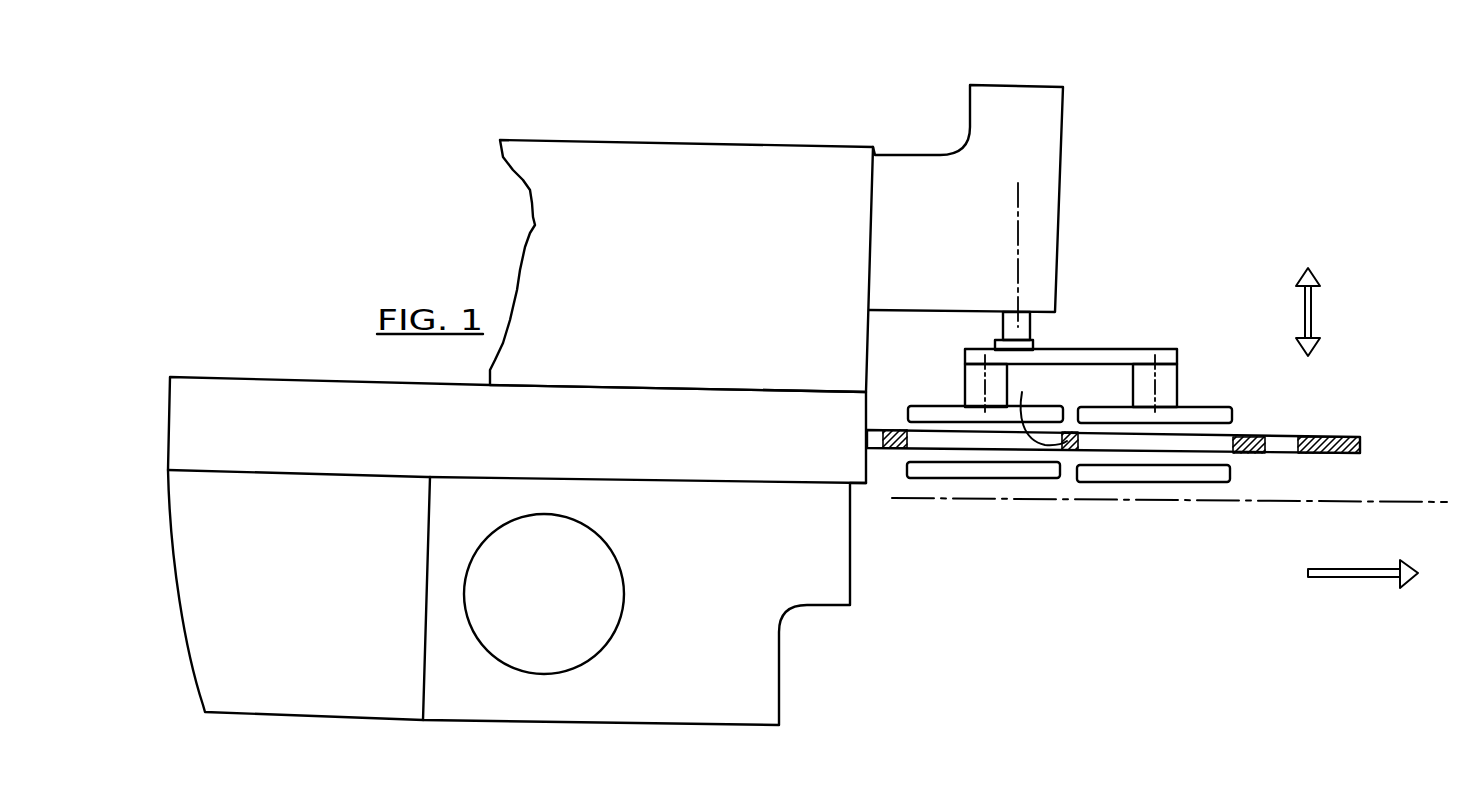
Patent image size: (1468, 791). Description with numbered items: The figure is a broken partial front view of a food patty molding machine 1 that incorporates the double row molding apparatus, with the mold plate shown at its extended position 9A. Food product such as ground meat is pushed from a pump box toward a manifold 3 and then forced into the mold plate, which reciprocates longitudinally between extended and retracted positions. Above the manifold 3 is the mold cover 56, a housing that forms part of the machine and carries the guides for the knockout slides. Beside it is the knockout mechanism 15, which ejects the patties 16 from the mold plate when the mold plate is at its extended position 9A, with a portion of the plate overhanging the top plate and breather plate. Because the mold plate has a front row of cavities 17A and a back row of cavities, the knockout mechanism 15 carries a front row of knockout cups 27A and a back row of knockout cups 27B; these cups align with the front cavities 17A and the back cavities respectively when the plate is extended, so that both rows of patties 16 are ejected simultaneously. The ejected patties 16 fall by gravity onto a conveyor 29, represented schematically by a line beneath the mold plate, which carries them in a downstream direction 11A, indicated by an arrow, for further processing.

The food patty molding machine 1 is at (610, 128).
The mold cover 56 is at (713, 175).
The knockout mechanism 15 is at (1040, 144).
The manifold 3 is at (718, 577).
The back row of knockout cups 27B is at (932, 412).
The front row of knockout cups 27A is at (1223, 416).
The mold plate extended position 9A is at (1336, 428).
The front cavities 17A is at (1232, 443).
The patties 16 is at (942, 468).
The conveyor 29 is at (1380, 503).
The downstream direction 11A is at (1368, 579).